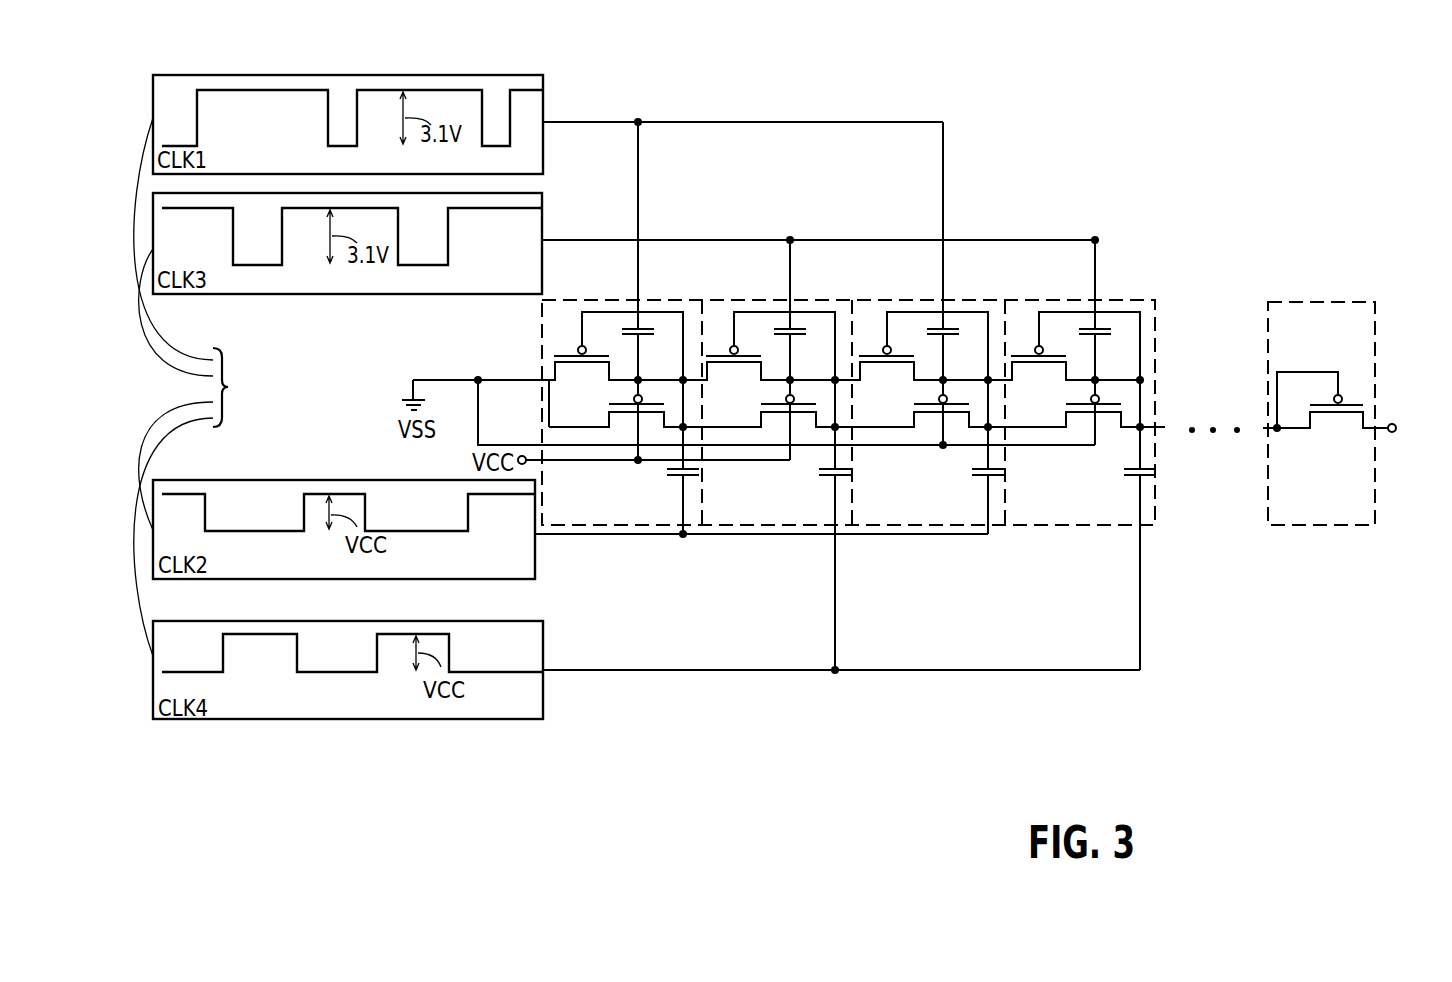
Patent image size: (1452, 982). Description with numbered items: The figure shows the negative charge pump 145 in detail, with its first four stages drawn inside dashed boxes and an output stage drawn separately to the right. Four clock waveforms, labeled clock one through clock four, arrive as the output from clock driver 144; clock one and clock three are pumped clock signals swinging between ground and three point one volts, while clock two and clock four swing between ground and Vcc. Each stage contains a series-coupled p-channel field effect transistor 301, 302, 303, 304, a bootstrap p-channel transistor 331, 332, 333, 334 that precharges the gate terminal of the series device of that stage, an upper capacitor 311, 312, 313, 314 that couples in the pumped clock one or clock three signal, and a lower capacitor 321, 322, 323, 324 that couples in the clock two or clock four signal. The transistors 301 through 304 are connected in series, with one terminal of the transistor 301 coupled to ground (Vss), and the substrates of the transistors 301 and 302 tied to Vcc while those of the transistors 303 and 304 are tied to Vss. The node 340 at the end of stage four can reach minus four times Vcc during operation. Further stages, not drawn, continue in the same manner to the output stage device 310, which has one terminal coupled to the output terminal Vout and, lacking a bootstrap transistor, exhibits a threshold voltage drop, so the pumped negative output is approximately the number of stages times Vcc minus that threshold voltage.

The clock driver 144 is at (250, 387).
The negative charge pump 145 is at (1212, 105).
The p-channel field effect transistor 301 is at (647, 403).
The p-channel field effect transistor 302 is at (800, 403).
The p-channel field effect transistor 303 is at (953, 403).
The p-channel field effect transistor 304 is at (1108, 402).
The output stage device 310 is at (1350, 398).
The capacitor 311 is at (657, 332).
The capacitor 312 is at (809, 332).
The capacitor 313 is at (962, 332).
The capacitor 314 is at (1114, 332).
The capacitor 321 is at (677, 488).
The capacitor 322 is at (829, 488).
The capacitor 323 is at (981, 488).
The capacitor 324 is at (1133, 488).
The bootstrap p-channel transistor 331 is at (575, 350).
The bootstrap p-channel transistor 332 is at (731, 346).
The bootstrap p-channel transistor 333 is at (884, 346).
The bootstrap p-channel transistor 334 is at (1036, 346).
The node 340 is at (1143, 424).